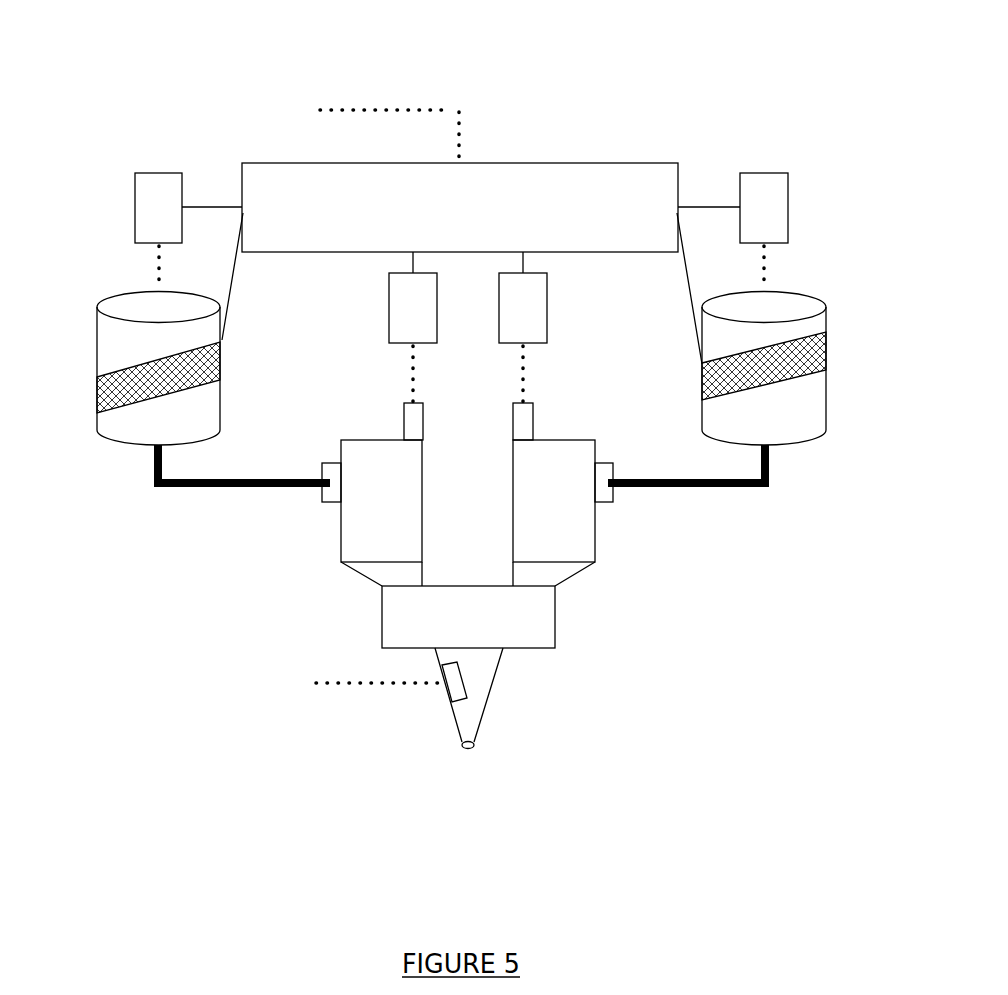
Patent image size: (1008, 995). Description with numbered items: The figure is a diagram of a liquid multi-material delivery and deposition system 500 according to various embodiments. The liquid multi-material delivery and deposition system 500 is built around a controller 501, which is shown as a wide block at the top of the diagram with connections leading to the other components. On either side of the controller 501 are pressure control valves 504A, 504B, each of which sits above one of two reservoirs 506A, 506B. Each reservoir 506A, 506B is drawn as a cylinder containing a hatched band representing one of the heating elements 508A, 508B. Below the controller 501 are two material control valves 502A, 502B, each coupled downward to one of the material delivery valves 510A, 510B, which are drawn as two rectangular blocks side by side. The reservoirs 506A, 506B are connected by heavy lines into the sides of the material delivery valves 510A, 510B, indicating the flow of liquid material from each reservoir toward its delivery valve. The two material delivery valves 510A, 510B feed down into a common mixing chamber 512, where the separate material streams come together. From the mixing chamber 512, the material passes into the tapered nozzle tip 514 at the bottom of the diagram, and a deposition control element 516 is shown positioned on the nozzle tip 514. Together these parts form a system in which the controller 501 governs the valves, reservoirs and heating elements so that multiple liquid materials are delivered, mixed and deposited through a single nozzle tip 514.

The liquid multi-material delivery and deposition system 500 is at (290, 68).
The controller 501 is at (460, 207).
The material control valve 502A is at (415, 312).
The material control valve 502B is at (527, 313).
The pressure control valve 504A is at (154, 207).
The pressure control valve 504B is at (770, 205).
The reservoir 506A is at (117, 343).
The reservoir 506B is at (810, 413).
The heating element 508A is at (110, 390).
The heating element 508B is at (827, 350).
The material delivery valve 510A is at (372, 494).
The material delivery valve 510B is at (563, 494).
The mixing chamber 512 is at (468, 617).
The nozzle tip 514 is at (482, 720).
The deposition control element 516 is at (452, 683).